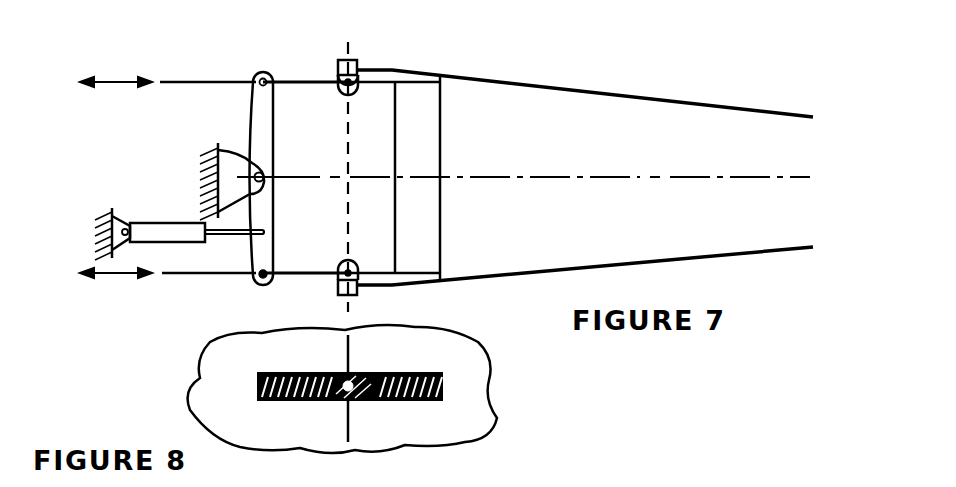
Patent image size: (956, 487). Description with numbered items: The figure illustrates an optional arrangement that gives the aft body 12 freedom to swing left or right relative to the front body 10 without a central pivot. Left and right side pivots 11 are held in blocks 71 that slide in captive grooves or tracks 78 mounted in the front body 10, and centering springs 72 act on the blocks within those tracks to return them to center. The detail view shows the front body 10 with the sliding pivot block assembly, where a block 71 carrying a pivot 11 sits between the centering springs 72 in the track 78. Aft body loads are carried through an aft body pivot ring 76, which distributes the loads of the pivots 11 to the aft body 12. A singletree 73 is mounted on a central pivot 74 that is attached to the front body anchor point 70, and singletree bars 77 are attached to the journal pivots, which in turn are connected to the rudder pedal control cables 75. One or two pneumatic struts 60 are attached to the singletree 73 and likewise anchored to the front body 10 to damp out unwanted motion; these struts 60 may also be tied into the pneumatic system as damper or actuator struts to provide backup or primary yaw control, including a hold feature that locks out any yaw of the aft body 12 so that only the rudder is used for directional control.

In FIG. 8, the front body 10 is at (262, 340).
In FIG. 7, the pivots 11 is at (358, 66).
In FIG. 8, the pivots 11 is at (372, 374).
In FIG. 7, the aft body 12 is at (604, 89).
In FIG. 7, the struts 60 is at (158, 223).
In FIG. 7, the front body anchor point 70 is at (237, 153).
In FIG. 8, the blocks 71 is at (343, 399).
In FIG. 8, the centering springs 72 is at (272, 371).
In FIG. 7, the singletree 73 is at (277, 240).
In FIG. 7, the central pivot 74 is at (272, 170).
In FIG. 7, the rudder pedal control cables 75 is at (233, 82).
In FIG. 7, the aft body pivot ring 76 is at (443, 152).
In FIG. 7, the singletree bars 77 is at (311, 80).
In FIG. 8, the tracks 78 is at (258, 388).